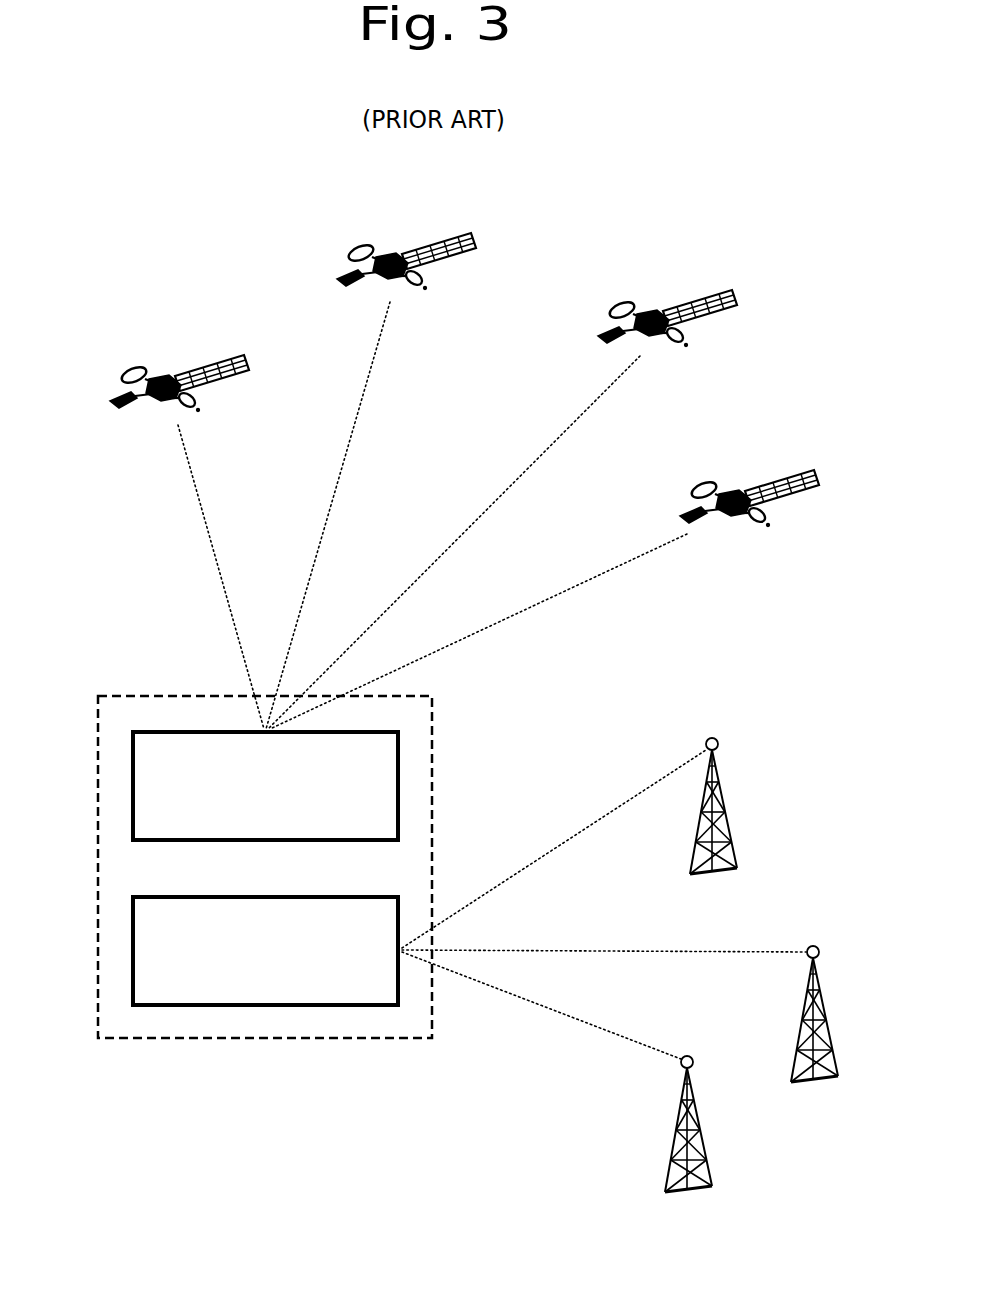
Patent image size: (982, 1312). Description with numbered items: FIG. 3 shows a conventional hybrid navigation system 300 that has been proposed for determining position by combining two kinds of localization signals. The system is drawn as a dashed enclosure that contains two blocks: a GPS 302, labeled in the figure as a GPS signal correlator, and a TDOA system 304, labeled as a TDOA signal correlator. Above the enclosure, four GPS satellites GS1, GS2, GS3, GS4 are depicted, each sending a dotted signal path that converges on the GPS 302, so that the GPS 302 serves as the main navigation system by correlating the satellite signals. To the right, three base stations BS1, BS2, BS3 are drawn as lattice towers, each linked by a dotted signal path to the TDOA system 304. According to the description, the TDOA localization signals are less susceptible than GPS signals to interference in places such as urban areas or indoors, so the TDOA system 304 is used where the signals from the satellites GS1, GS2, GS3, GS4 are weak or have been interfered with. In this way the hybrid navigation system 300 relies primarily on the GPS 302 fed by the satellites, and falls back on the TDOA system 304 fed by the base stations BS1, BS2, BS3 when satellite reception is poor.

The hybrid navigation system 300 is at (434, 766).
The GPS 302 is at (128, 783).
The TDOA system 304 is at (128, 948).
The GPS satellite 1 GS1 is at (179, 369).
The GPS satellite 2 GS2 is at (406, 247).
The GPS satellite 3 GS3 is at (667, 304).
The GPS satellite 4 GS4 is at (749, 485).
The base station 1 BS1 is at (713, 823).
The base station 2 BS2 is at (814, 1031).
The base station 3 BS3 is at (688, 1140).